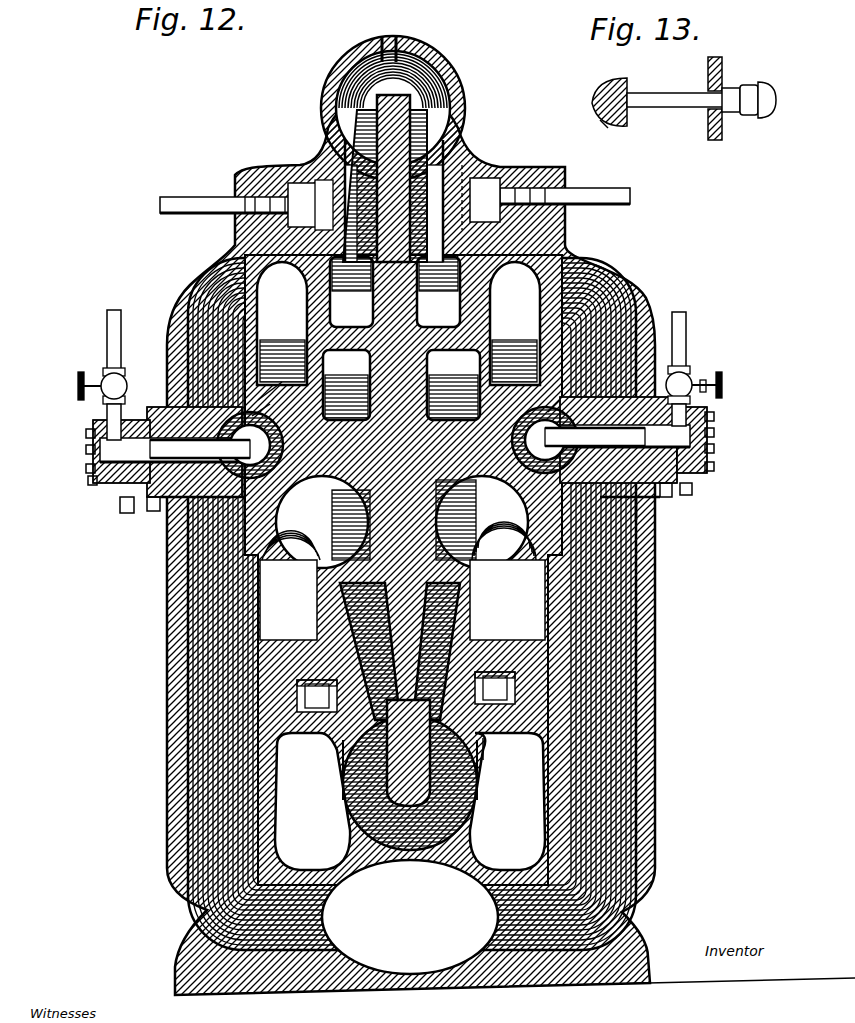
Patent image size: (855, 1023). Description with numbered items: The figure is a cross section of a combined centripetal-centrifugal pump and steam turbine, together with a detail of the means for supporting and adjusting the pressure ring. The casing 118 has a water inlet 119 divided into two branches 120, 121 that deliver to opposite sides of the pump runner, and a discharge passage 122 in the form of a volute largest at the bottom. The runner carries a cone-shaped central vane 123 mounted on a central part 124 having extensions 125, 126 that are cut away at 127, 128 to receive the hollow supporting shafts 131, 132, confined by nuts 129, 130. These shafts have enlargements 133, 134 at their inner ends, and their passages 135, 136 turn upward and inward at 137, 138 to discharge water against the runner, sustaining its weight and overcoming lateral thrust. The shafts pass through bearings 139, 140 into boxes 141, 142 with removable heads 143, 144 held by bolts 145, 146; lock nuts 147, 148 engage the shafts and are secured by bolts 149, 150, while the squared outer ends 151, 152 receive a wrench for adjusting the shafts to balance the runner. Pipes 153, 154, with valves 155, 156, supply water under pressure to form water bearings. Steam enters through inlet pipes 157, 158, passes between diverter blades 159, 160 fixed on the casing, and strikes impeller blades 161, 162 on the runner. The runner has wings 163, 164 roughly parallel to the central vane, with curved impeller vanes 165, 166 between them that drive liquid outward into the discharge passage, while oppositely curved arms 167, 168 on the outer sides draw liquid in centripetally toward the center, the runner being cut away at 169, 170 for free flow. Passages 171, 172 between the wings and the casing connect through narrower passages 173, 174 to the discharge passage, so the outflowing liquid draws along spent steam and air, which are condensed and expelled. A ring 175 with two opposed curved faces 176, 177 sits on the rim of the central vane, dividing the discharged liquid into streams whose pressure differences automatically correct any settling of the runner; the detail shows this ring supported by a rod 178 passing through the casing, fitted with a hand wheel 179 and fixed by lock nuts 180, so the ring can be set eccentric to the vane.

In FIG. 12, the casing 118 is at (167, 580).
In FIG. 12, the water inlet 119 is at (410, 917).
In FIG. 12, the inlet branch 120 is at (412, 604).
In FIG. 12, the inlet branch 121 is at (422, 604).
In FIG. 12, the discharge passage 122 is at (368, 64).
In FIG. 12, the central vane 123 is at (395, 640).
In FIG. 12, the central part 124 is at (265, 560).
In FIG. 12, the extension 125 is at (235, 425).
In FIG. 12, the extension 126 is at (547, 410).
In FIG. 12, the cutaway portion 127 is at (180, 500).
In FIG. 12, the cutaway portion 128 is at (482, 522).
In FIG. 12, the nut 129 is at (272, 402).
In FIG. 12, the nut 130 is at (552, 415).
In FIG. 12, the supporting shaft 131 is at (95, 425).
In FIG. 12, the supporting shaft 132 is at (655, 500).
In FIG. 12, the enlargement 133 is at (323, 522).
In FIG. 12, the enlargement 134 is at (620, 400).
In FIG. 12, the passage 135 is at (88, 449).
In FIG. 12, the passage 136 is at (645, 512).
In FIG. 12, the upturned passage end 137 is at (270, 412).
In FIG. 12, the upturned passage end 138 is at (520, 420).
In FIG. 12, the bearing 139 is at (170, 410).
In FIG. 12, the bearing 140 is at (622, 410).
In FIG. 12, the box 141 is at (125, 500).
In FIG. 12, the box 142 is at (712, 468).
In FIG. 12, the removable head 143 is at (88, 468).
In FIG. 12, the removable head 144 is at (712, 432).
In FIG. 12, the bolt 145 is at (88, 434).
In FIG. 12, the bolt 146 is at (714, 449).
In FIG. 12, the lock nut 147 is at (100, 455).
In FIG. 12, the lock nut 148 is at (692, 480).
In FIG. 12, the bolt 149 is at (150, 512).
In FIG. 12, the bolt 150 is at (668, 488).
In FIG. 12, the squared shaft end 151 is at (93, 480).
In FIG. 12, the squared shaft end 152 is at (712, 417).
In FIG. 12, the pipe 153 is at (107, 320).
In FIG. 12, the pipe 154 is at (688, 333).
In FIG. 12, the valve 155 is at (101, 380).
In FIG. 12, the valve 156 is at (722, 375).
In FIG. 12, the steam inlet pipe 157 is at (190, 200).
In FIG. 12, the steam inlet pipe 158 is at (585, 195).
In FIG. 12, the diverter blade 159 is at (290, 185).
In FIG. 12, the diverter blade 160 is at (492, 180).
In FIG. 12, the impeller blade 161 is at (320, 180).
In FIG. 12, the impeller blade 162 is at (470, 165).
In FIG. 12, the wing 163 is at (297, 694).
In FIG. 12, the wing 164 is at (515, 686).
In FIG. 12, the curved impeller vane 165 is at (351, 292).
In FIG. 12, the curved impeller vane 166 is at (438, 292).
In FIG. 12, the curved arm 167 is at (282, 323).
In FIG. 12, the curved arm 168 is at (512, 323).
In FIG. 12, the cutaway 169 is at (346, 385).
In FIG. 12, the cutaway 170 is at (471, 385).
In FIG. 12, the passage 171 is at (350, 722).
In FIG. 12, the passage 172 is at (540, 715).
In FIG. 12, the narrow passage 173 is at (312, 801).
In FIG. 12, the narrow passage 174 is at (504, 751).
In FIG. 12, the ring 175 is at (332, 95).
In FIG. 13, the ring 175 is at (615, 125).
In FIG. 12, the curved face 176 is at (345, 778).
In FIG. 13, the curved face 176 is at (600, 100).
In FIG. 12, the curved face 177 is at (504, 770).
In FIG. 13, the curved face 177 is at (605, 115).
In FIG. 13, the rod 178 is at (680, 100).
In FIG. 13, the hand wheel 179 is at (760, 118).
In FIG. 13, the lock nut 180 is at (714, 138).